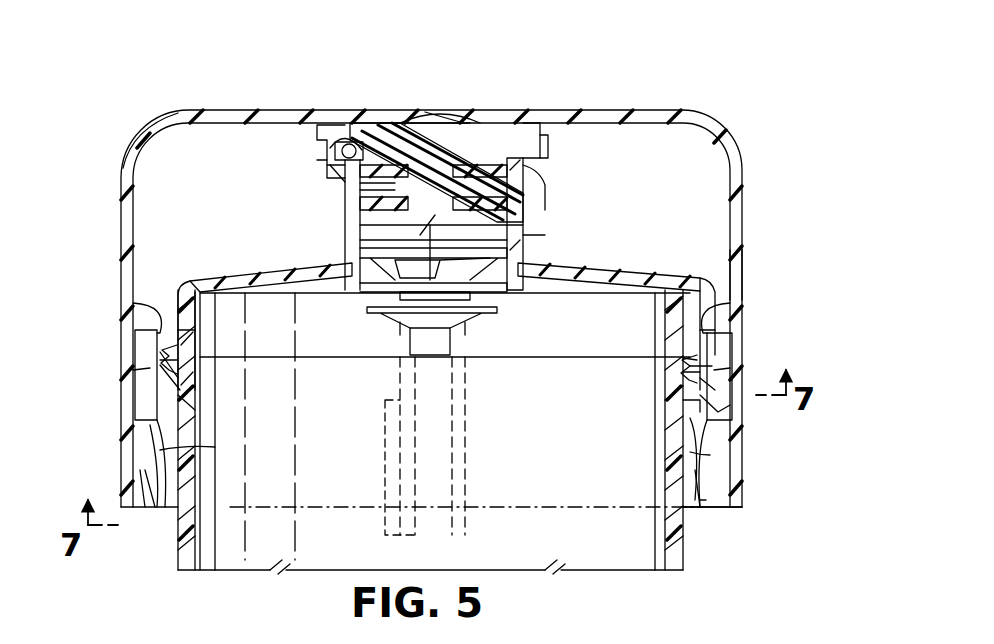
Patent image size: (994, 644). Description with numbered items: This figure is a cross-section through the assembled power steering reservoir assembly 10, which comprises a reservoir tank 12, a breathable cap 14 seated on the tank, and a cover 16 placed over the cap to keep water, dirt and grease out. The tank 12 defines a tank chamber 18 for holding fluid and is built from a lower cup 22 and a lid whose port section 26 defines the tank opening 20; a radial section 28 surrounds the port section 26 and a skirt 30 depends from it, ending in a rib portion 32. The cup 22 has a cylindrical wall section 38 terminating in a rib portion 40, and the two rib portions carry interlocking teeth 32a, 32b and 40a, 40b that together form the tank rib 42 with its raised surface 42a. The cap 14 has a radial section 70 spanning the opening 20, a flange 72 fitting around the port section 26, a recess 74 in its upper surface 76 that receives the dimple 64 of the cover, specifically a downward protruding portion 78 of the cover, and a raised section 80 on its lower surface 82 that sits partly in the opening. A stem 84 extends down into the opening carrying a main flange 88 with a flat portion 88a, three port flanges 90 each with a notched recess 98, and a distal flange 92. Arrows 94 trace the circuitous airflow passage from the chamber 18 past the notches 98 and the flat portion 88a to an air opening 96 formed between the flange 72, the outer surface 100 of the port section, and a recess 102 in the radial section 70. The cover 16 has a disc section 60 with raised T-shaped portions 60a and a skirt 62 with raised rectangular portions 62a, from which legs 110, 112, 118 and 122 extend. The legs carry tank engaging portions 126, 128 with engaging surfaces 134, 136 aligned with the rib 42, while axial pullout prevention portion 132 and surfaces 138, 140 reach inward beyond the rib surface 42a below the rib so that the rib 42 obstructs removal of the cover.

The reservoir assembly 10 is at (770, 106).
The reservoir tank 12 is at (690, 552).
The breathable cap 14 is at (548, 152).
The cover 16 is at (750, 160).
The tank chamber 18 is at (510, 446).
The tank opening 20 is at (522, 238).
The cup 22 is at (180, 556).
The port section 26 is at (350, 222).
The radial section 28 is at (628, 270).
The skirt 30 is at (172, 298).
The rib portion 32 is at (198, 346).
The tooth 32a is at (702, 336).
The tooth 32b is at (705, 370).
The cylindrical wall section 38 is at (740, 500).
The rib portion 40 is at (215, 395).
The tooth 40a is at (680, 366).
The tooth 40b is at (685, 410).
The tank rib 42 is at (720, 412).
The raised surface 42a is at (712, 386).
The disc section 60 is at (622, 106).
The T-shaped portion 60a is at (237, 108).
The skirt 62 is at (744, 266).
The rectangular-shaped portion 62a is at (133, 276).
The dimple 64 is at (420, 116).
The radial section 70 is at (510, 128).
The flange 72 is at (546, 166).
The recess 74 is at (442, 120).
The upper surface 76 is at (356, 125).
The portion 78 is at (442, 122).
The raised section 80 is at (528, 186).
The lower surface 82 is at (531, 174).
The stem 84 is at (420, 340).
The main flange 88 is at (521, 215).
The flat portion 88a is at (360, 192).
The port flange 90 is at (352, 242).
The distal flange 92 is at (492, 312).
The airflow passage 94 is at (325, 148).
The air opening 96 is at (322, 167).
The notched recess 98 is at (505, 284).
The outer surface 100 is at (342, 184).
The recess 102 is at (372, 148).
The first leg 110 is at (408, 512).
The first leg 112 is at (462, 510).
The second leg 118 is at (146, 508).
The second leg 122 is at (720, 510).
The tank engaging portion 126 is at (400, 384).
The tank engaging portion 128 is at (134, 391).
The axial pullout prevention portion 132 is at (158, 453).
The first leg engaging surface 134 is at (466, 386).
The second leg engaging surface 136 is at (150, 320).
The first leg surface 138 is at (396, 464).
The second leg surface 140 is at (215, 447).